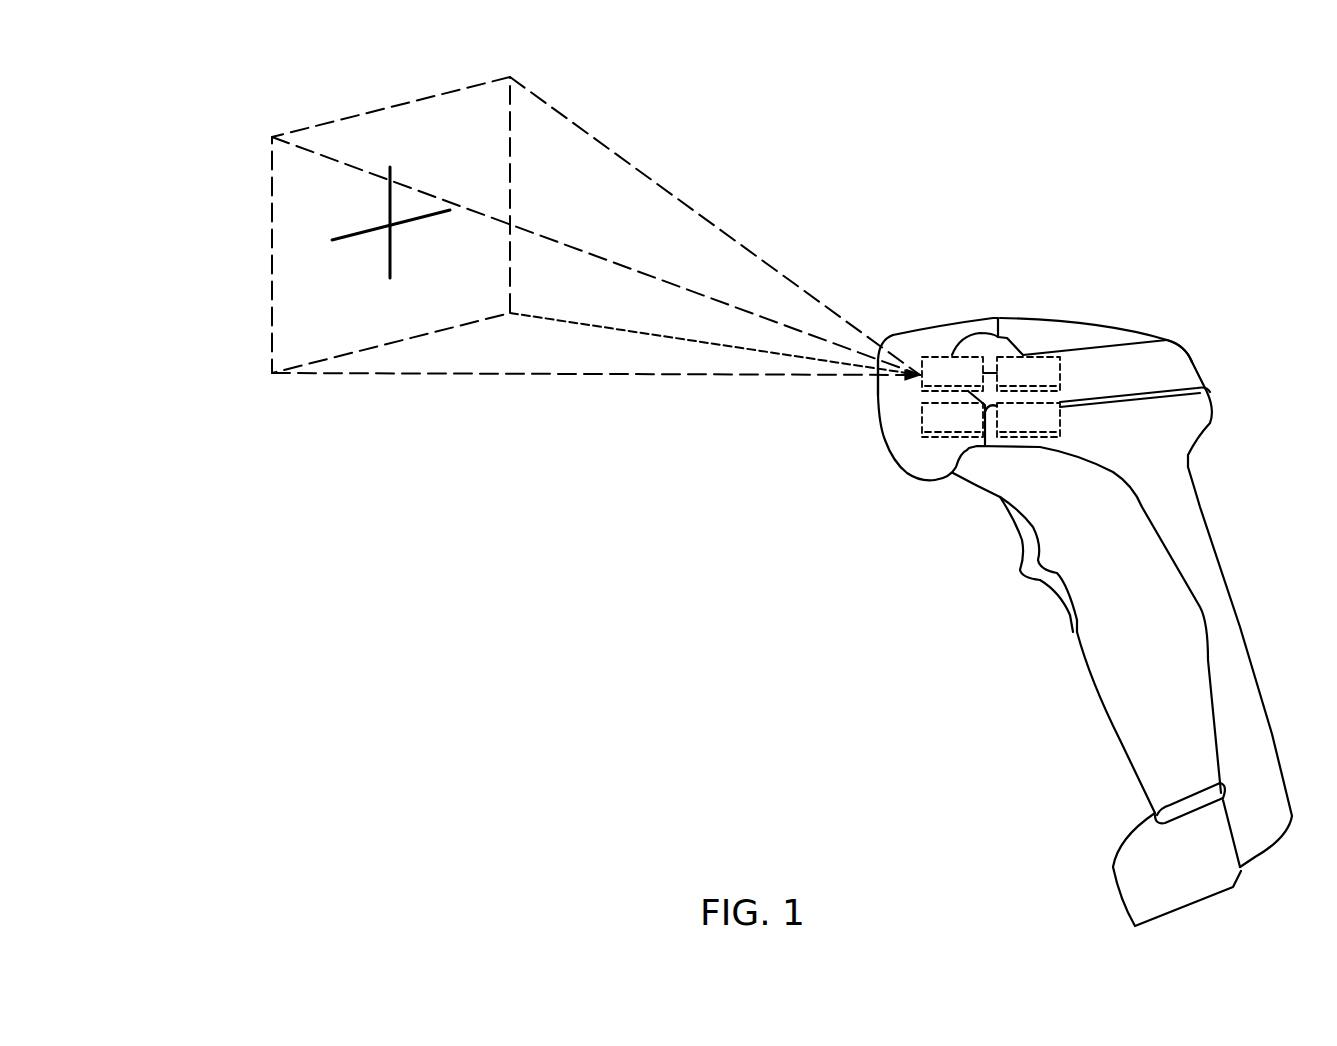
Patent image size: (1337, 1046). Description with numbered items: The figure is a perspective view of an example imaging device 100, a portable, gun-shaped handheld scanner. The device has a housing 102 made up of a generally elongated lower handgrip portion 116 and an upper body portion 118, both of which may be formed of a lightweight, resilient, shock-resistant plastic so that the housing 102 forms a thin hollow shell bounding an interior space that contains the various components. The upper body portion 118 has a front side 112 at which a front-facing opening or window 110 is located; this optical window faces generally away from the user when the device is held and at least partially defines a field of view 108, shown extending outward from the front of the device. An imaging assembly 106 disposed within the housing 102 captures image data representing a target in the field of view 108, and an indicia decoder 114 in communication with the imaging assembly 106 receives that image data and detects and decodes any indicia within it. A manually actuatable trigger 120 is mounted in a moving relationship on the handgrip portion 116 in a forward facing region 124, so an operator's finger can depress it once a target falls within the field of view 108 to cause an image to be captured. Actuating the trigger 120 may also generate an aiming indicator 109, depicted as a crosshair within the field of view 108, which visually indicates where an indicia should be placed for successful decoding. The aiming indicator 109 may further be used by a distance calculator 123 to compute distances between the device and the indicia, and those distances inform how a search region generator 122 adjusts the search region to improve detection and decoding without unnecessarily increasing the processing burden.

The imaging device 100 is at (1212, 213).
The housing 102 is at (917, 334).
The imaging assembly 106 is at (959, 374).
The field of view 108 is at (590, 135).
The aiming indicator 109 is at (332, 240).
The front-facing opening or window 110 is at (877, 403).
The front side 112 is at (840, 465).
The indicia decoder 114 is at (952, 420).
The handgrip portion 116 is at (1240, 603).
The upper body portion 118 is at (1185, 362).
The trigger 120 is at (1023, 567).
The search region generator 122 is at (1028, 420).
The distance calculator 123 is at (1028, 374).
The forward facing region 124 is at (998, 648).